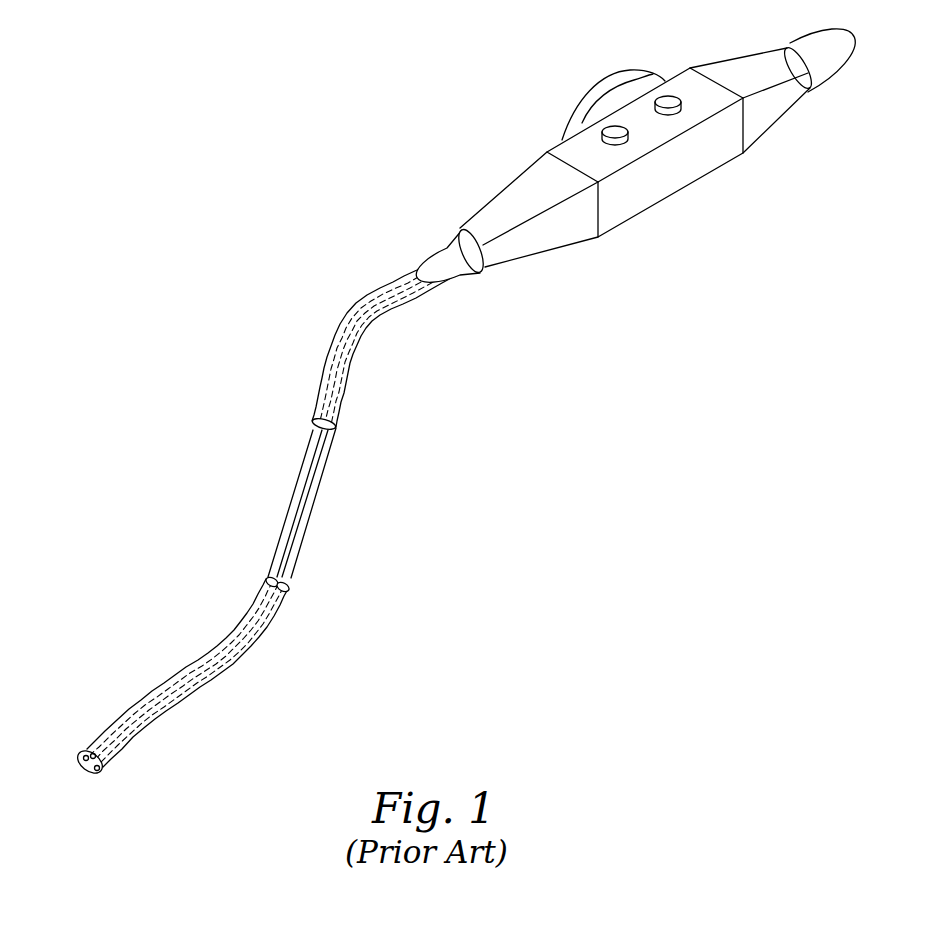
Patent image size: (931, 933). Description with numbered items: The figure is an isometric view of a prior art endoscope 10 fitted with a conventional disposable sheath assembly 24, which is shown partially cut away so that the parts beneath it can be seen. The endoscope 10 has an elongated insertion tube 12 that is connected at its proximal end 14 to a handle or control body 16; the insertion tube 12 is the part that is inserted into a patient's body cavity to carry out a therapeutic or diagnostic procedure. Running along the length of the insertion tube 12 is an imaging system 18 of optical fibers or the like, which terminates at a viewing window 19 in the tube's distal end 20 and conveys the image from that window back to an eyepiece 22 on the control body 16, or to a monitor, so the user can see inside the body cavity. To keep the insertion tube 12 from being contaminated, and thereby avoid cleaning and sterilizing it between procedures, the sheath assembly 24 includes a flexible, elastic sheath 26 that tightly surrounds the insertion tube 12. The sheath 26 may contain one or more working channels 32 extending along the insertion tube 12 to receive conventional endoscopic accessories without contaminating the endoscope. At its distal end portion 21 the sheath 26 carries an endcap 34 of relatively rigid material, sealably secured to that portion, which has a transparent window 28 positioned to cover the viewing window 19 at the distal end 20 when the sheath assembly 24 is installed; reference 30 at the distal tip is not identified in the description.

The endoscope 10 is at (537, 273).
The insertion tube 12 is at (318, 473).
The proximal end 14 is at (462, 242).
The control body 16 is at (508, 210).
The imaging system 18 is at (298, 535).
The viewing window 19 is at (97, 777).
The distal end 20 is at (117, 765).
The distal end portion 21 is at (100, 770).
The eyepiece 22 is at (814, 56).
The sheath assembly 24 is at (607, 77).
The sheath 26 is at (227, 670).
The transparent window 28 is at (82, 767).
The distal end face 30 is at (82, 758).
The working channels 32 is at (292, 507).
The endcap 34 is at (100, 737).